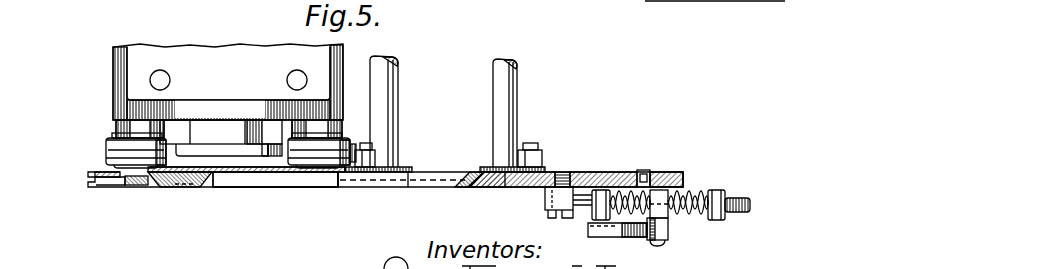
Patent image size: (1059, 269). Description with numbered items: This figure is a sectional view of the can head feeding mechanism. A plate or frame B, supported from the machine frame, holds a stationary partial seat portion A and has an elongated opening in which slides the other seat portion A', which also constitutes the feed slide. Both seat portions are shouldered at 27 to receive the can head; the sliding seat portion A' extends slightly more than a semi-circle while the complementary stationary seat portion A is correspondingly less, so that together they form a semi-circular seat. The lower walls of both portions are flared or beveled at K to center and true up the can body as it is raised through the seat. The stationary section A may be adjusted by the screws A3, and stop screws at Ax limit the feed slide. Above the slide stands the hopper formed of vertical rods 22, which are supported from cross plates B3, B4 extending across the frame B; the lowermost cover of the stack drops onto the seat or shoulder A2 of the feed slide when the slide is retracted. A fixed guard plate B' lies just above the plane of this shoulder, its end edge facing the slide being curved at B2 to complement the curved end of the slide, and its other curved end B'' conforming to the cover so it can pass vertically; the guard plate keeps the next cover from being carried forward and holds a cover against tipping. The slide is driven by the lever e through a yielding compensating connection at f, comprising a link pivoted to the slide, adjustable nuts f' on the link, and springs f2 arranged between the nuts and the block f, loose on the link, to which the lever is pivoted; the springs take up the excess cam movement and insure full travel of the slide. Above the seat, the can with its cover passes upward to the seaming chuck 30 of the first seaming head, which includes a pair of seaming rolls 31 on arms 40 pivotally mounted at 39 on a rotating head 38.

The rotating head 38 is at (113, 63).
The pivot 39 is at (161, 71).
The arms 40 is at (118, 128).
The seaming chuck 30 is at (221, 138).
The seaming rolls 31 is at (110, 150).
The vertical rods 22 is at (505, 102).
The shoulder 27 is at (183, 186).
The sliding seat portion A' is at (410, 113).
The stationary seat portion A is at (116, 208).
The seat or shoulder of feed slide A2 is at (478, 166).
The adjusting screws A3 is at (107, 183).
The stop screws Ax is at (641, 170).
The flared lower wall K is at (166, 190).
The plate or frame B is at (666, 157).
The guard plate B' is at (276, 200).
The curved end of guard plate B'' is at (247, 199).
The curved end edge B2 is at (370, 170).
The cross plate B3 is at (357, 173).
The cross plate B4 is at (545, 166).
The block f is at (670, 236).
The adjustable nuts f' is at (650, 182).
The springs f2 is at (690, 200).
The lever e is at (626, 230).